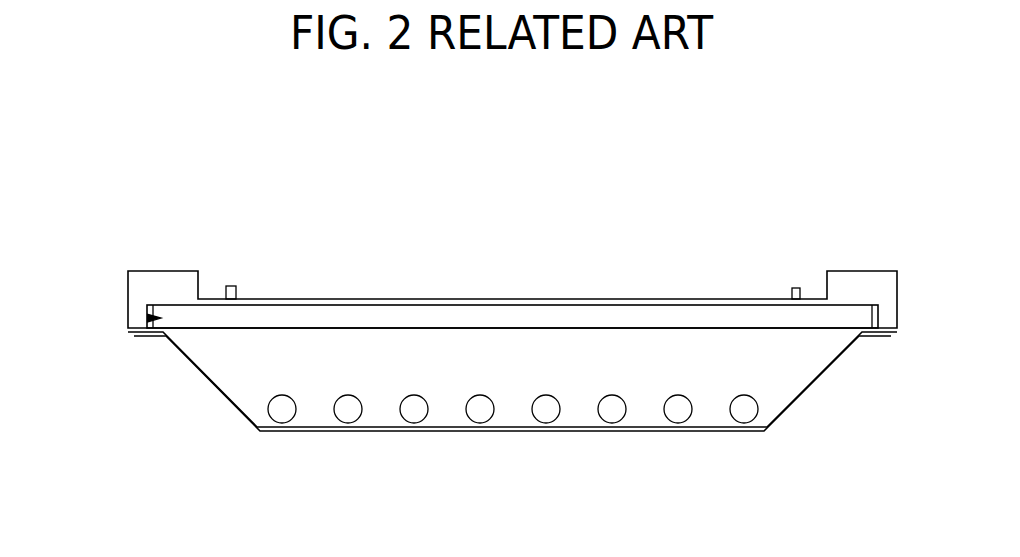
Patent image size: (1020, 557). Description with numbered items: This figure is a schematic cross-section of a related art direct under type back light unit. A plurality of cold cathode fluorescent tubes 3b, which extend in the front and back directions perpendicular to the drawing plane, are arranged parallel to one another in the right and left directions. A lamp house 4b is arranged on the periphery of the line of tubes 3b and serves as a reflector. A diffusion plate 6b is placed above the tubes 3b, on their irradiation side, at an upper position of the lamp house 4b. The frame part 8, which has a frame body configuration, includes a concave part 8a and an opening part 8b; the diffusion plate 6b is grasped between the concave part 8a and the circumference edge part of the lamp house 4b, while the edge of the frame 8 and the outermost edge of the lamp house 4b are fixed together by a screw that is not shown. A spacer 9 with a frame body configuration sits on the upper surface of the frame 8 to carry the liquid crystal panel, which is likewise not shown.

The frame part 8 is at (139, 287).
The concave part 8a is at (151, 318).
The opening part 8b is at (788, 299).
The spacer 9 is at (230, 285).
The diffusion plate 6b is at (520, 320).
The lamp house 4b is at (247, 420).
The cold cathode fluorescent tubes 3b is at (281, 407).